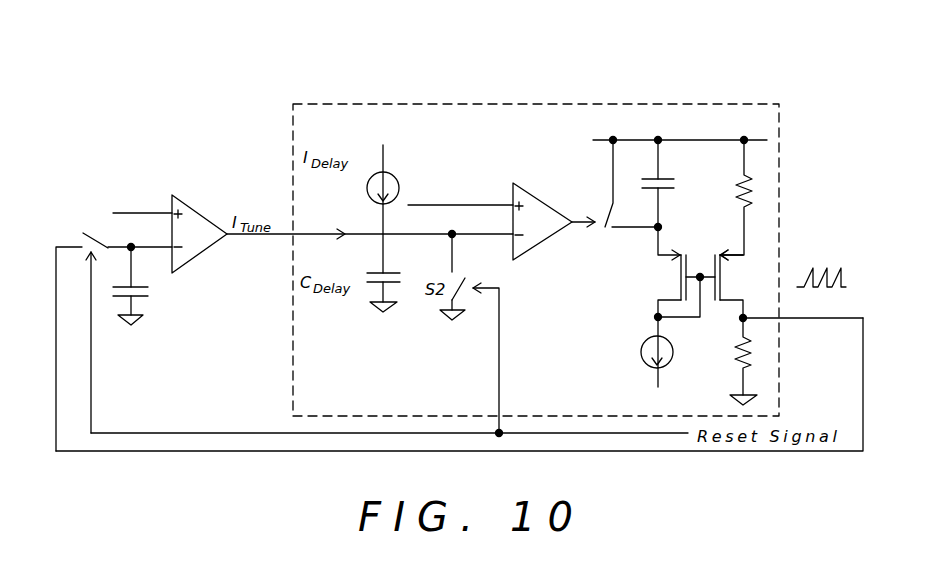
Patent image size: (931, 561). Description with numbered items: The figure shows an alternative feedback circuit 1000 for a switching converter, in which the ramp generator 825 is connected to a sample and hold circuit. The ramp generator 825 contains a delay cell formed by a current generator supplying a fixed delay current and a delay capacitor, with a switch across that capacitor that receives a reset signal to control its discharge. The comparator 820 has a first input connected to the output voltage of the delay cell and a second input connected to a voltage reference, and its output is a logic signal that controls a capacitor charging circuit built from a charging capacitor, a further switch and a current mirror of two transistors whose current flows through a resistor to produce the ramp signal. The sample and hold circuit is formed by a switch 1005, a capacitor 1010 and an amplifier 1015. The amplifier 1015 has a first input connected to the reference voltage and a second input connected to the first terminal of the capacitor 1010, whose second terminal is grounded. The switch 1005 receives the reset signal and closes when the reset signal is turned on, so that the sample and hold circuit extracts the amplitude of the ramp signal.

The feedback circuit 1000 is at (420, 57).
The switch 1005 is at (78, 235).
The capacitor 1010 is at (200, 310).
The amplifier 1015 is at (202, 208).
The comparator 820 is at (545, 198).
The ramp generator 825 is at (783, 188).